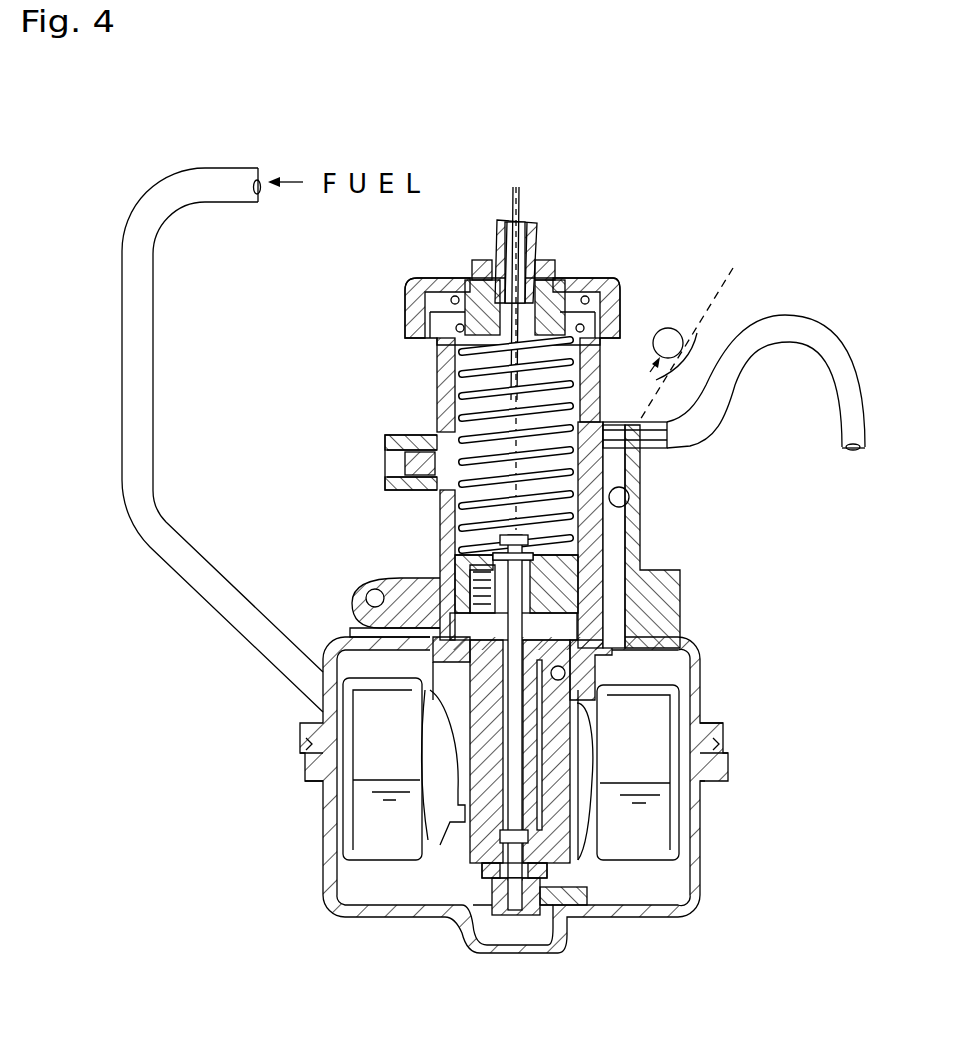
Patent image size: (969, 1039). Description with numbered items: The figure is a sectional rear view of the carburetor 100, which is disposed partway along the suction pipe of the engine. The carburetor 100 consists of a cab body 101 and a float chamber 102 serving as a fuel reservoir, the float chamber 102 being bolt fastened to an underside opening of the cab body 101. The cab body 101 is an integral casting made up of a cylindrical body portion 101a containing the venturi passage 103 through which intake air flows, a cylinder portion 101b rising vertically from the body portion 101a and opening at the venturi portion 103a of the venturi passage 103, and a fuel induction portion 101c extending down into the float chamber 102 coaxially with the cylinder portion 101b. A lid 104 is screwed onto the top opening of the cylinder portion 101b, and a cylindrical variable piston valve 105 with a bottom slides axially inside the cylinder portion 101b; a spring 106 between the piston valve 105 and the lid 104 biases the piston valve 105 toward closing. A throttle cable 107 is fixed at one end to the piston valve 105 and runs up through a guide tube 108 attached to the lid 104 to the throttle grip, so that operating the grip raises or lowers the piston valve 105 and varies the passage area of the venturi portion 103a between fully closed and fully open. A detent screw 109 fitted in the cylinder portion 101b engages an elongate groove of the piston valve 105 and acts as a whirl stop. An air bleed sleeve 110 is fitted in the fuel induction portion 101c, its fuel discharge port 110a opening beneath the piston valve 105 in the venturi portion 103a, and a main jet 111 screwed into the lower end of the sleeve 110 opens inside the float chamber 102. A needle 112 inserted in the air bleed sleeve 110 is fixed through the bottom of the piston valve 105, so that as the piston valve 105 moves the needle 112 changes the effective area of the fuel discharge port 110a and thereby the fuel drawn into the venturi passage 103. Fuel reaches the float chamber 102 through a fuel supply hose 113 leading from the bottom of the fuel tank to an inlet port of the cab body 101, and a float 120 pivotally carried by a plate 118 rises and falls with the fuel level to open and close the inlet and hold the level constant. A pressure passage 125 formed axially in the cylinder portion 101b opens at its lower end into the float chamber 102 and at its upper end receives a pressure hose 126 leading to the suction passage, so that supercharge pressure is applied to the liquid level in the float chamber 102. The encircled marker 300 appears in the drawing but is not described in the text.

The carburetor 100 is at (644, 256).
The cab body 101 is at (418, 542).
The cylindrical body portion 101a is at (422, 588).
The cylinder portion 101b is at (440, 410).
The fuel induction portion 101c is at (462, 915).
The float chamber 102 is at (312, 853).
The venturi passage 103 is at (362, 605).
The venturi portion 103a is at (597, 627).
The lid 104 is at (613, 308).
The variable piston valve 105 is at (450, 518).
The spring 106 is at (450, 366).
The throttle cable 107 is at (527, 205).
The guide tube 108 is at (493, 242).
The detent screw 109 is at (402, 437).
The air bleed sleeve 110 is at (477, 707).
The fuel discharge port 110a is at (510, 760).
The main jet 111 is at (480, 943).
The needle 112 is at (440, 650).
The fuel supply hose 113 is at (155, 315).
The plate 118 is at (442, 855).
The float 120 is at (365, 862).
The pressure passage 125 is at (628, 500).
The pressure hose 126 is at (782, 316).
The temperature sensor 300 is at (705, 323).